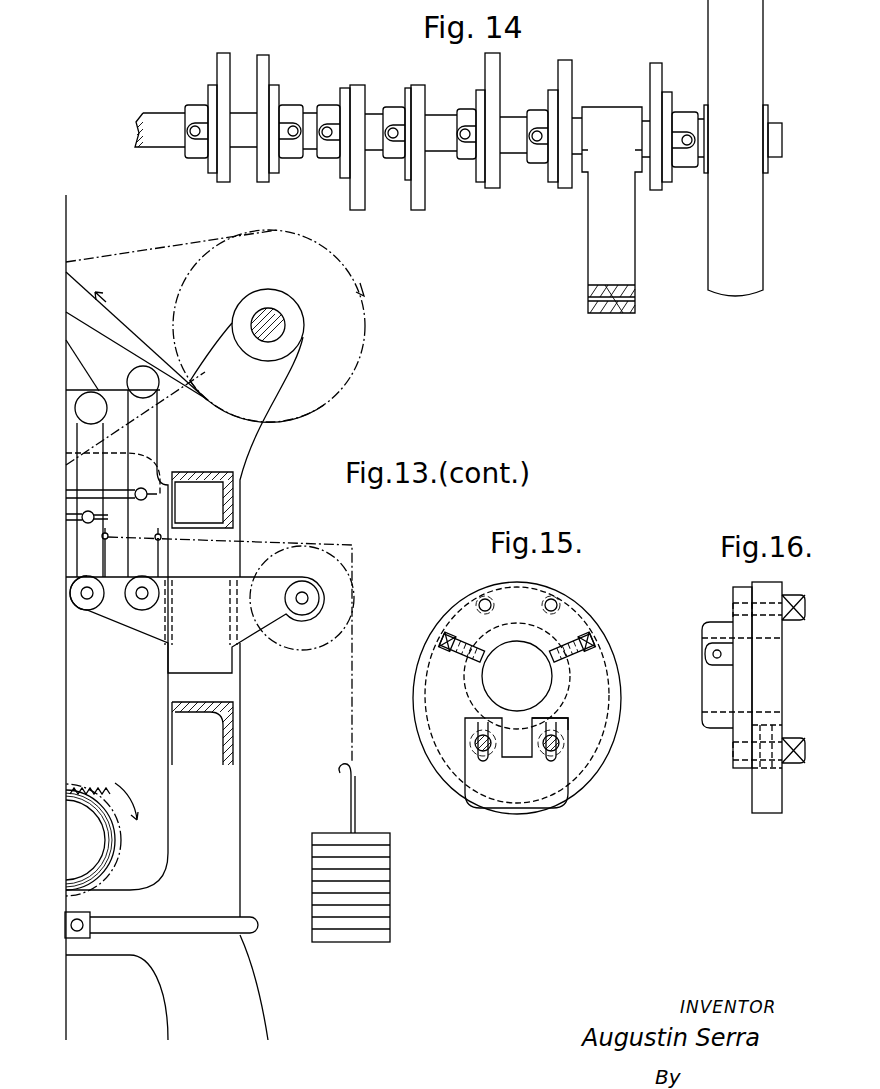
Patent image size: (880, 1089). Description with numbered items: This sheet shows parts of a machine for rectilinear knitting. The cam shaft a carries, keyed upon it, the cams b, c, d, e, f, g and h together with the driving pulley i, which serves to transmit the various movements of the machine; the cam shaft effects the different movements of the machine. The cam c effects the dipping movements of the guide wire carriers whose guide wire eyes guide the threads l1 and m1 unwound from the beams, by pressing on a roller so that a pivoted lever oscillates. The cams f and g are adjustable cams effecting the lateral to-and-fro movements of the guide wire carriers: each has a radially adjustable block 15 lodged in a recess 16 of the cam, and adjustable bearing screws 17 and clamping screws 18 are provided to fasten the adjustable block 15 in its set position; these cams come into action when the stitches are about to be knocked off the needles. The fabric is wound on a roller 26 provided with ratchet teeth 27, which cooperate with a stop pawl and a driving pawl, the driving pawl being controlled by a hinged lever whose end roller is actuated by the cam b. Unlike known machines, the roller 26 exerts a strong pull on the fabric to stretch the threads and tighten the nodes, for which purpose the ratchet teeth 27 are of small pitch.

In FIG. 14, the cam shaft a is at (157, 132).
In FIG. 14, the cam h is at (225, 75).
In FIG. 14, the cam g is at (263, 82).
In FIG. 14, the cam f is at (353, 90).
In FIG. 15, the cam f is at (600, 628).
In FIG. 16, the cam f is at (763, 653).
In FIG. 14, the cam e is at (415, 102).
In FIG. 14, the cam d is at (492, 77).
In FIG. 14, the cam c is at (562, 78).
In FIG. 14, the cam b is at (652, 72).
In FIG. 14, the driving pulley i is at (748, 62).
In FIG. 13, the thread l1 is at (125, 332).
In FIG. 13, the thread m1 is at (81, 362).
In FIG. 13, the roller 26 is at (108, 858).
In FIG. 13, the ratchet teeth 27 is at (94, 790).
In FIG. 15, the adjustable block 15 is at (473, 779).
In FIG. 16, the adjustable block 15 is at (762, 807).
In FIG. 15, the recess 16 is at (568, 722).
In FIG. 16, the recess 16 is at (737, 742).
In FIG. 15, the bearing screws 17 is at (477, 718).
In FIG. 16, the bearing screws 17 is at (780, 722).
In FIG. 15, the clamping screws 18 is at (555, 745).
In FIG. 16, the clamping screws 18 is at (793, 767).